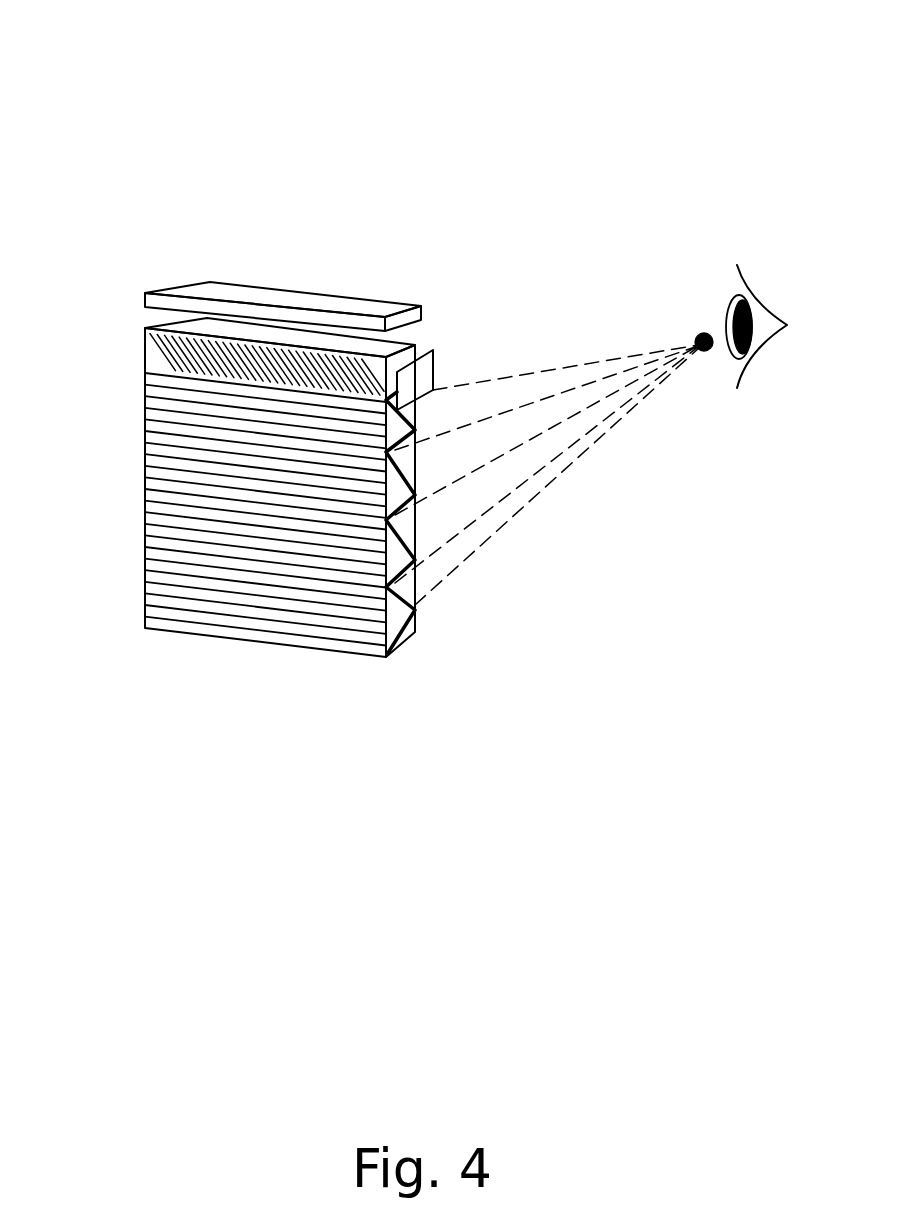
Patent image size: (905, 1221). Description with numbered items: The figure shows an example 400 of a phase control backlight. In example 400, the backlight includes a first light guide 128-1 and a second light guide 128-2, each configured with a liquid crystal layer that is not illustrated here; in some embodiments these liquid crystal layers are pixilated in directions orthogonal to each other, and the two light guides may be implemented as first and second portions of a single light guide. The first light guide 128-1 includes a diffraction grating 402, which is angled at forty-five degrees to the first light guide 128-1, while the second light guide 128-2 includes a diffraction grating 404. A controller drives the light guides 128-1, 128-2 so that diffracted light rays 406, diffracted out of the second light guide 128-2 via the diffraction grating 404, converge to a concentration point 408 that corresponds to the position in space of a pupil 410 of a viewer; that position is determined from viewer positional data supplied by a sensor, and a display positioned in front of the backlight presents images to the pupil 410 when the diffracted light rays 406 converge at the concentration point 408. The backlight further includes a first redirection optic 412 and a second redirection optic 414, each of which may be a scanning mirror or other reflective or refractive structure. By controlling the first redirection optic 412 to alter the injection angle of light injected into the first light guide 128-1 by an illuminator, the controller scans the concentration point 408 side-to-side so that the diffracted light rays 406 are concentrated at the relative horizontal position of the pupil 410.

The example 400 is at (110, 38).
The first light guide 128-1 is at (147, 327).
The second light guide 128-2 is at (147, 475).
The diffraction grating 402 is at (150, 353).
The diffraction grating 404 is at (165, 553).
The diffracted light rays 406 is at (604, 330).
The concentration point 408 is at (703, 333).
The pupil 410 is at (752, 295).
The first redirection optic 412 is at (433, 350).
The second redirection optic 414 is at (285, 290).